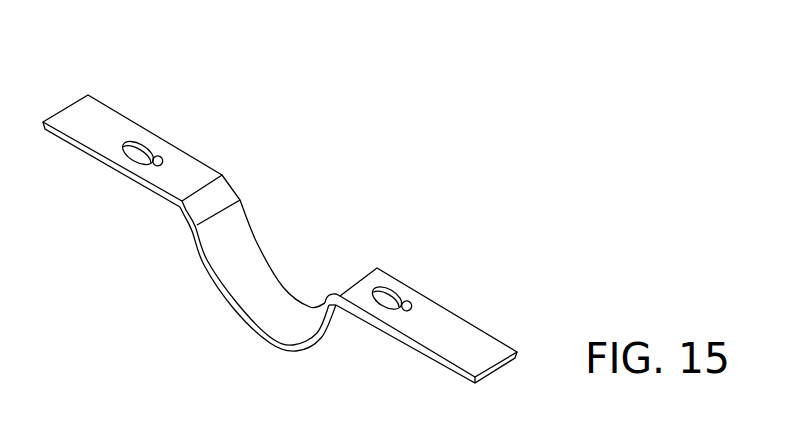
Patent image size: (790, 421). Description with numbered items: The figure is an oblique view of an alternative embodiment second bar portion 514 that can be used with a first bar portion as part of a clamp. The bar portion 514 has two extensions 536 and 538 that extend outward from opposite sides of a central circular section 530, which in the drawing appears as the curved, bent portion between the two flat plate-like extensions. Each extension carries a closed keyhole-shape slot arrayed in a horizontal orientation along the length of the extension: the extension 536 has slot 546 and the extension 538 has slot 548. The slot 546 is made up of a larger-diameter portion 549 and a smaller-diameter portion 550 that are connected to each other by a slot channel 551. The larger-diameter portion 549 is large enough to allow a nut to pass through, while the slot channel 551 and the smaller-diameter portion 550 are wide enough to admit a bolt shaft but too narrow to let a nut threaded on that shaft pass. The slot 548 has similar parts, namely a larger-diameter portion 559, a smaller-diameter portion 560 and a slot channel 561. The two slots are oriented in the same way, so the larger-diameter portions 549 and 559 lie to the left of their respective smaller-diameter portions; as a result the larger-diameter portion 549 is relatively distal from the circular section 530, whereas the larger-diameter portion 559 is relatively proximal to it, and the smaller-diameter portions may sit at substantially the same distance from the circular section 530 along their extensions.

The second bar portion 514 is at (88, 70).
The circular section 530 is at (282, 290).
The extension 536 is at (88, 133).
The extension 538 is at (477, 338).
The closed keyhole-shape slot 546 is at (142, 174).
The closed keyhole-shape slot 548 is at (396, 319).
The larger-diameter portion 549 is at (137, 152).
The smaller-diameter portion 550 is at (155, 152).
The slot channel 551 is at (163, 160).
The larger-diameter portion 559 is at (385, 292).
The smaller-diameter portion 560 is at (400, 303).
The slot channel 561 is at (413, 307).